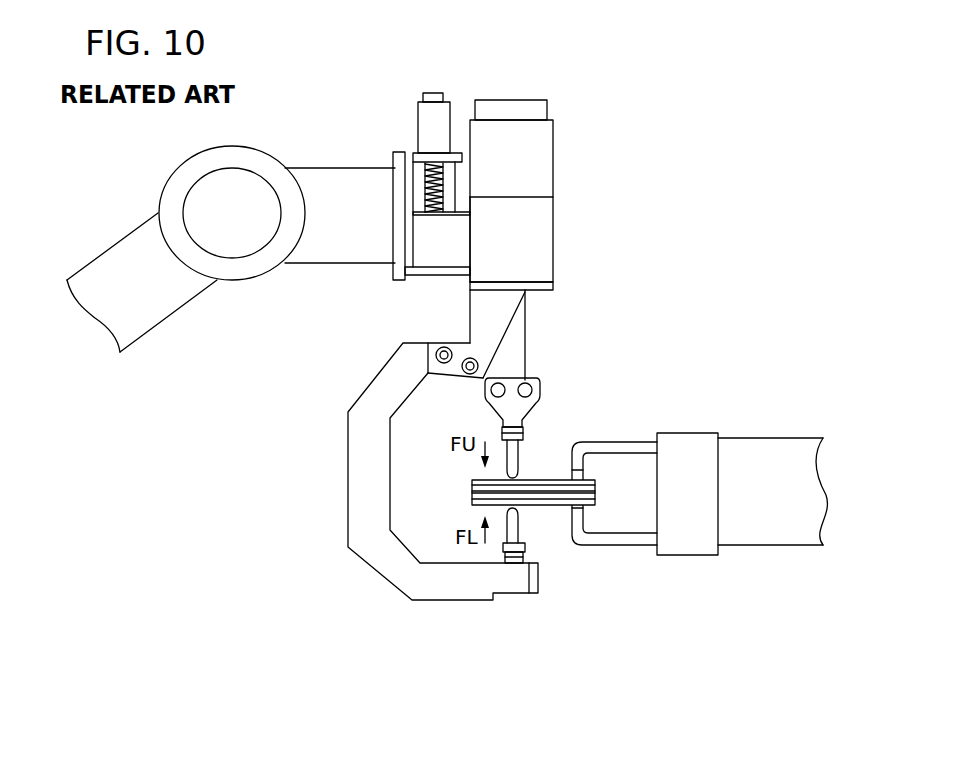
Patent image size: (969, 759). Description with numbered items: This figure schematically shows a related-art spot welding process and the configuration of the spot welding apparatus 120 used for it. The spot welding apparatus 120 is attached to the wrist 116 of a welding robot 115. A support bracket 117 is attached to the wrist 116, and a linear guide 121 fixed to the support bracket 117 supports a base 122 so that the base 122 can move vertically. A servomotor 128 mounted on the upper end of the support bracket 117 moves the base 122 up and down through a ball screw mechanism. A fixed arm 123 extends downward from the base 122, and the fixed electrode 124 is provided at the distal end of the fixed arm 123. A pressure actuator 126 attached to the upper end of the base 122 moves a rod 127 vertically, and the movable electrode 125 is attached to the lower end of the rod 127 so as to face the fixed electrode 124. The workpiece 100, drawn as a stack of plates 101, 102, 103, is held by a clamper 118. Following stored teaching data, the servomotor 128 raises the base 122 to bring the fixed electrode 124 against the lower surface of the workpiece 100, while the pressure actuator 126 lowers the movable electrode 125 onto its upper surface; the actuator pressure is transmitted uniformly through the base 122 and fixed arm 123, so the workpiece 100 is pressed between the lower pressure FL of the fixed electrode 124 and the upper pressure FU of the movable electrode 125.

The workpiece 100 is at (504, 535).
The first plate 101 is at (472, 482).
The second plate 102 is at (472, 492).
The third plate 103 is at (472, 502).
The welding robot 115 is at (112, 237).
The wrist 116 is at (308, 177).
The support bracket 117 is at (393, 274).
The clamper 118 is at (692, 545).
The spot welding apparatus 120 is at (602, 123).
The linear guide 121 is at (415, 157).
The base 122 is at (542, 238).
The fixed arm 123 is at (357, 472).
The fixed electrode 124 is at (515, 525).
The movable electrode 125 is at (513, 455).
The pressure actuator 126 is at (542, 157).
The rod 127 is at (517, 337).
The servomotor 128 is at (423, 118).